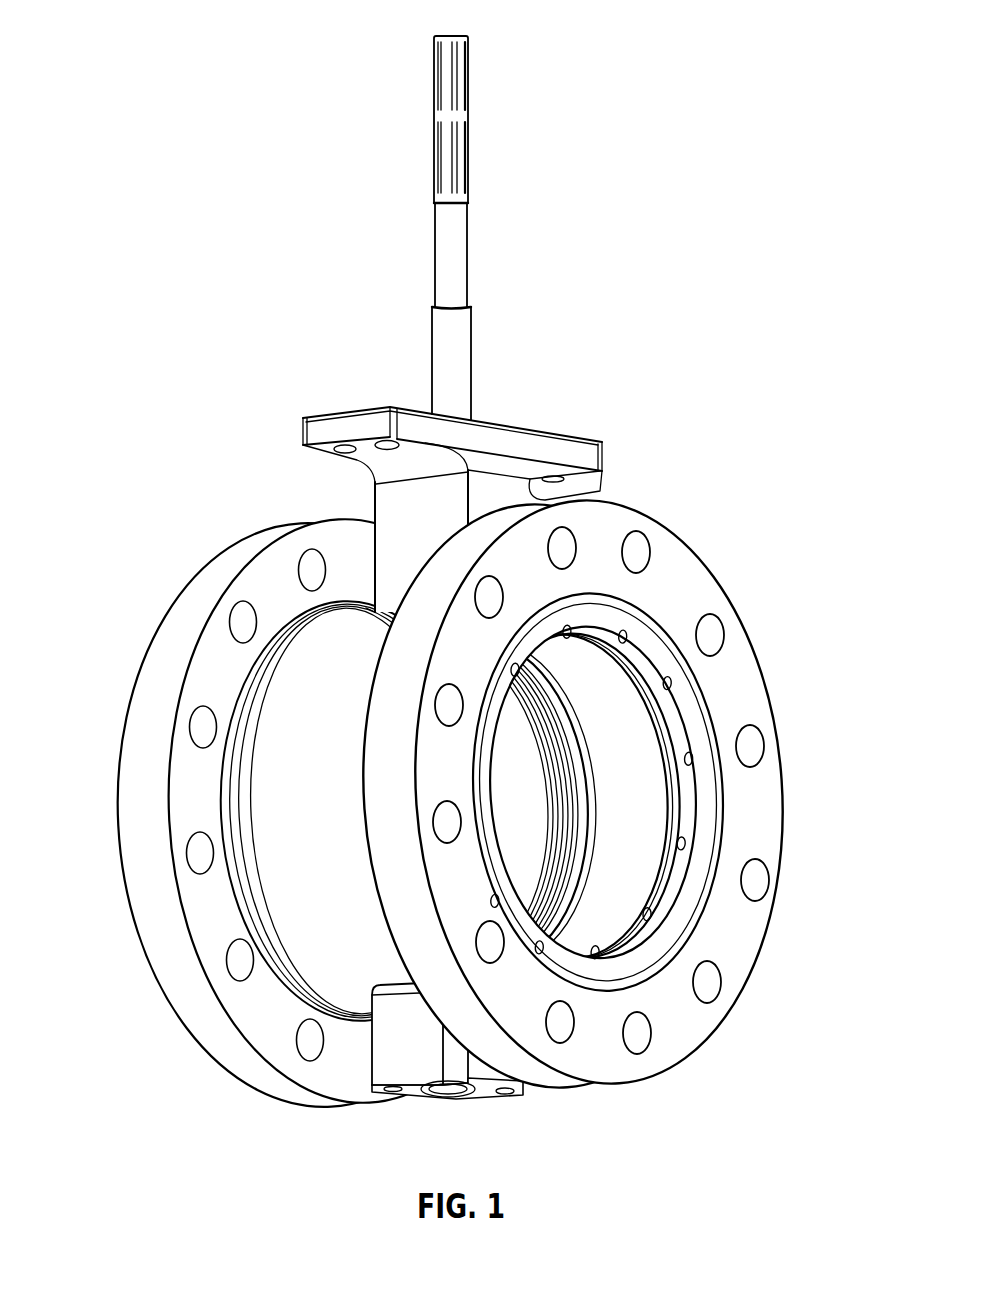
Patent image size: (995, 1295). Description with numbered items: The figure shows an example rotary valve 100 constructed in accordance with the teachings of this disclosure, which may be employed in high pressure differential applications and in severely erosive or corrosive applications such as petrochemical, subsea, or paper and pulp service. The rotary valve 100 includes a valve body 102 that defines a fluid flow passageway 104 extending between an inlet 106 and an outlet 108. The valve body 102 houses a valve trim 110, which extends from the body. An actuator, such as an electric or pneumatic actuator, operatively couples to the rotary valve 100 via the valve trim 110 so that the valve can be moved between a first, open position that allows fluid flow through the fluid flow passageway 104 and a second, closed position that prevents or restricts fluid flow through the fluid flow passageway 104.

The rotary valve 100 is at (447, 576).
The valve body 102 is at (292, 720).
The fluid flow passageway 104 is at (633, 833).
The inlet 106 is at (700, 682).
The outlet 108 is at (121, 808).
The valve trim 110 is at (463, 268).